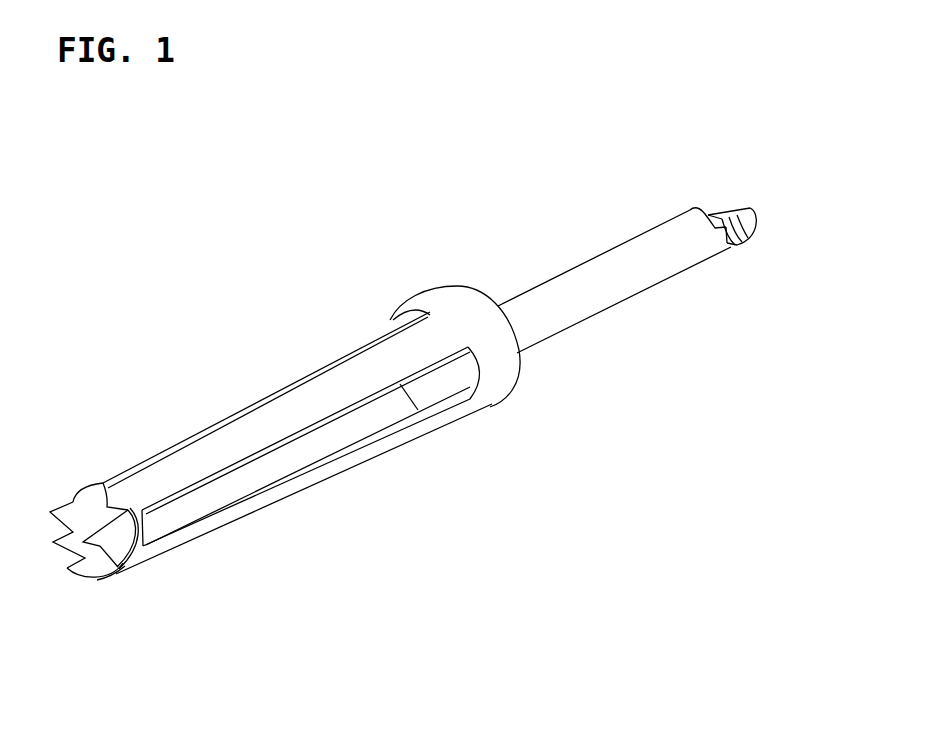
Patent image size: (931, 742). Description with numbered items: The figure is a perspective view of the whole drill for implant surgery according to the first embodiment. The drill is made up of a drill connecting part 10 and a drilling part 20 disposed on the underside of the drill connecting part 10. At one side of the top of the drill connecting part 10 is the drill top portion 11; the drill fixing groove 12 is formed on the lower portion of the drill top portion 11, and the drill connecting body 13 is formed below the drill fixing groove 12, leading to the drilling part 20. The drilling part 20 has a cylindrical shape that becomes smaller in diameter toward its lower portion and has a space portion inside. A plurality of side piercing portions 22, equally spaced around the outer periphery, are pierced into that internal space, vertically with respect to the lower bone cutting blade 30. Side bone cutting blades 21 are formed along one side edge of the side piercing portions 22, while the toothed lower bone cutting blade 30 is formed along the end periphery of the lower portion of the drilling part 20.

The drill connecting part 10 is at (538, 204).
The drill top portion 11 is at (755, 225).
The drill fixing groove 12 is at (738, 245).
The drill connecting body 13 is at (590, 305).
The drilling part 20 is at (186, 351).
The side bone cutting blade 21 is at (295, 487).
The side piercing portion 22 is at (360, 420).
The lower bone cutting blade 30 is at (120, 571).